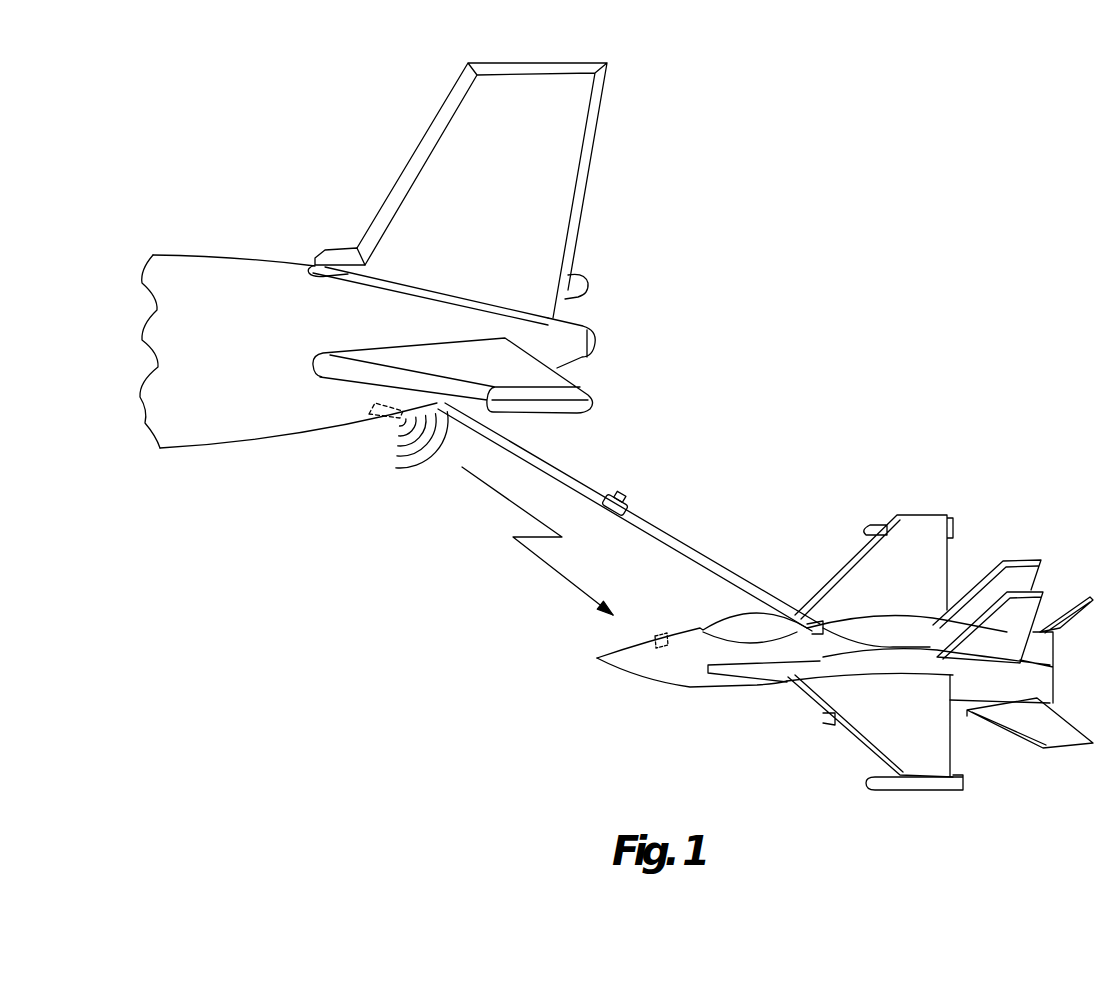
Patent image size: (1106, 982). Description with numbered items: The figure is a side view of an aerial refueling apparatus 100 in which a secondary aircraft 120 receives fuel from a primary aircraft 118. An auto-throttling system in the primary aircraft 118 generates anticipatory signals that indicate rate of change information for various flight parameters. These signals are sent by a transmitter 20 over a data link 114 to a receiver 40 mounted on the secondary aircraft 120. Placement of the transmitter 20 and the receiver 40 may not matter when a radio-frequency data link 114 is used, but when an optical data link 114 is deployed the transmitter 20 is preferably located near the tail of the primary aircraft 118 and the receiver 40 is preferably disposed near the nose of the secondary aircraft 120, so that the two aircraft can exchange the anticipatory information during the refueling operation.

The aerial refueling apparatus 100 is at (765, 385).
The primary aircraft 118 is at (373, 287).
The secondary aircraft 120 is at (845, 610).
The transmitter 20 is at (385, 420).
The receiver 40 is at (660, 632).
The data link 114 is at (505, 552).